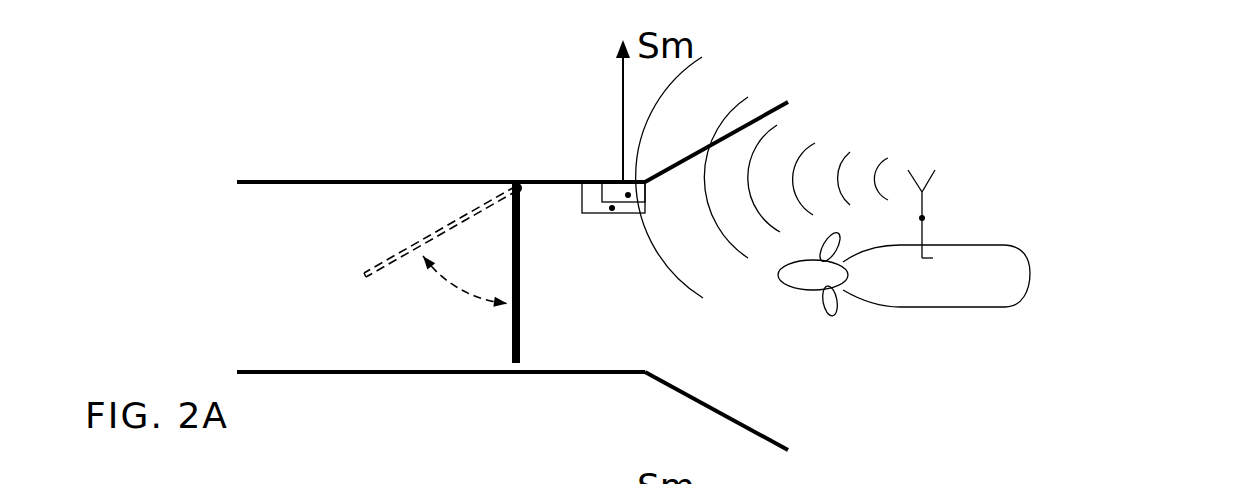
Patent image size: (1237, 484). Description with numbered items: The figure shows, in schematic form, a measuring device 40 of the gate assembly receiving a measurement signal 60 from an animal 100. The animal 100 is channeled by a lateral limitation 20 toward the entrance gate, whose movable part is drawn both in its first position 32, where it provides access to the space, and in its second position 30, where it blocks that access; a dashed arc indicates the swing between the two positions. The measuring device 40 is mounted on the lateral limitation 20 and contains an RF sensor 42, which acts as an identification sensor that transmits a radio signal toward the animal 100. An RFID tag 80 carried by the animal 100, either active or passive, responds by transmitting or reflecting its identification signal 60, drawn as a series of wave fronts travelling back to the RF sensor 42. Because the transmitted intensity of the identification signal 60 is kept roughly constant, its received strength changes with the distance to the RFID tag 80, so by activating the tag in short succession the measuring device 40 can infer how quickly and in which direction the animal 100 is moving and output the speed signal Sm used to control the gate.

The lateral limitation 20 is at (752, 408).
The entrance gate in second position 30 is at (521, 300).
The entrance gate in first position 32 is at (419, 246).
The measuring device 40 is at (612, 208).
The RF sensor 42 is at (628, 195).
The identification signal 60 is at (818, 128).
The RFID tag 80 is at (922, 218).
The animal 100 is at (1024, 240).